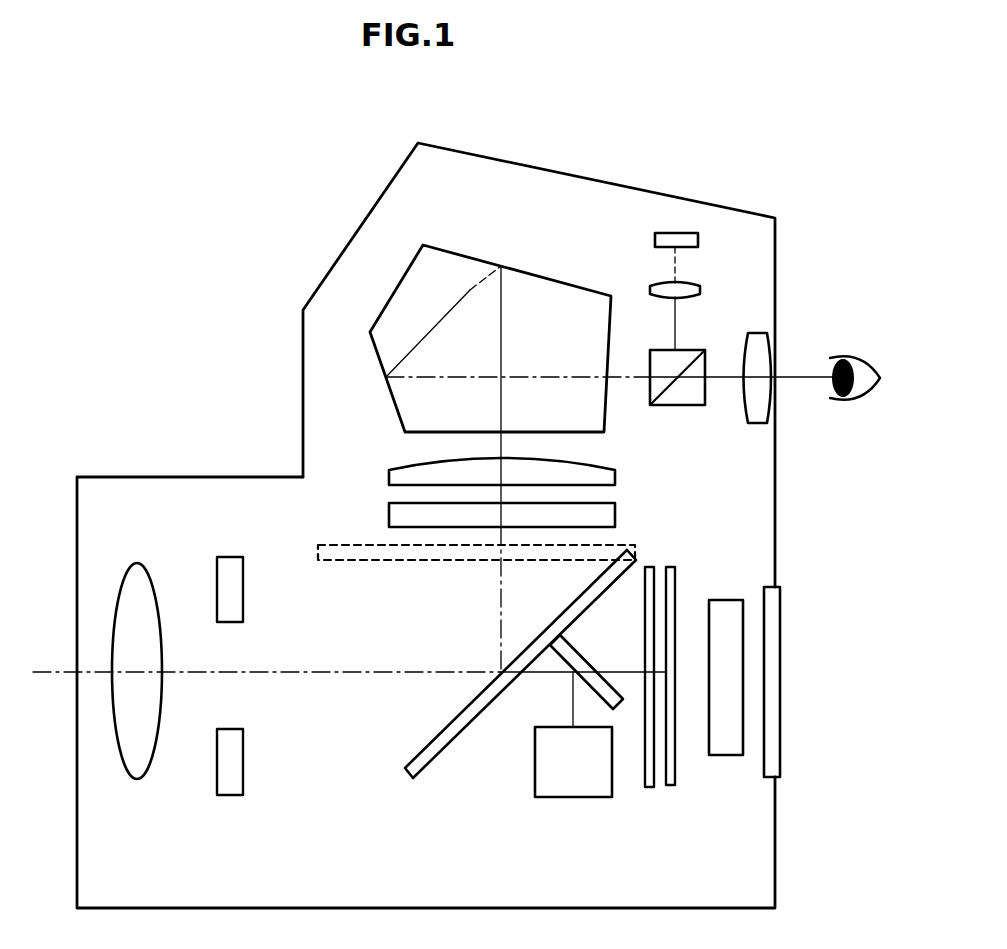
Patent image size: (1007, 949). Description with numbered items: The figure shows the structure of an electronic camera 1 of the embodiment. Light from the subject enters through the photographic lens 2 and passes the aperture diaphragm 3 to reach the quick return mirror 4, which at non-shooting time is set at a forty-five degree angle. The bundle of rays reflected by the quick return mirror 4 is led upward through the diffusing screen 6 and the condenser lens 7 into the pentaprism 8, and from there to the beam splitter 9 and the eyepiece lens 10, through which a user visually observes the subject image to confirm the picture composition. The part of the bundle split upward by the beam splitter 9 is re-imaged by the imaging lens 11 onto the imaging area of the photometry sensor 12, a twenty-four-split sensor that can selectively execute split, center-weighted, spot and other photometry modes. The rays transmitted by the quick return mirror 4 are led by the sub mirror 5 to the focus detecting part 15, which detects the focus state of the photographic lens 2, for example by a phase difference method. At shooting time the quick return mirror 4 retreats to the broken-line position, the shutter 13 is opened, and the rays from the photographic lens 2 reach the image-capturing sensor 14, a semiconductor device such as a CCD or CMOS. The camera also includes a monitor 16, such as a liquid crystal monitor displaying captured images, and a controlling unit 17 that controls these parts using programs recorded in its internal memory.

The electronic camera 1 is at (291, 335).
The photographic lens 2 is at (137, 561).
The aperture diaphragm 3 is at (233, 557).
The quick return mirror 4 is at (403, 767).
The sub mirror 5 is at (597, 673).
The diffusing screen 6 is at (388, 515).
The condenser lens 7 is at (388, 473).
The pentaprism 8 is at (448, 248).
The beam splitter 9 is at (649, 365).
The eyepiece lens 10 is at (757, 423).
The imaging lens 11 is at (703, 288).
The photometry sensor 12 is at (655, 240).
The shutter 13 is at (648, 567).
The image-capturing sensor 14 is at (670, 567).
The focus detecting part 15 is at (535, 757).
The monitor 16 is at (780, 603).
The controlling unit 17 is at (717, 757).